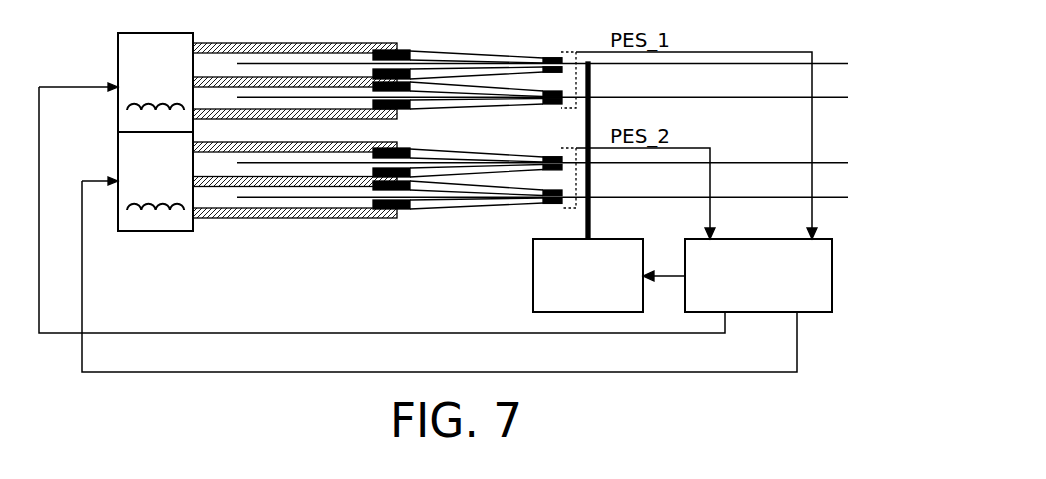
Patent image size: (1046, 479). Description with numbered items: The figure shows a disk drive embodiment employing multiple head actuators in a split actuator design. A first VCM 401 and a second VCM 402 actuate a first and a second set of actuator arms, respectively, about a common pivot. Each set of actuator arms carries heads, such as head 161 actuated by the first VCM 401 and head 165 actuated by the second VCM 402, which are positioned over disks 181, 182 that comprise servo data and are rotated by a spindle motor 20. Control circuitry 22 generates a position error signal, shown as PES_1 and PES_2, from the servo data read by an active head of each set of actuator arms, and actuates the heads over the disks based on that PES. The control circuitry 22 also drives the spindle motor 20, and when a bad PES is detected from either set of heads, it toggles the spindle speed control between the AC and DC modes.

The first VCM 401 is at (117, 43).
The second VCM 402 is at (117, 145).
The head 161 is at (543, 45).
The head 165 is at (545, 146).
The disk 181 is at (843, 52).
The disk 182 is at (838, 153).
The spindle motor 20 is at (533, 275).
The control circuitry 22 is at (832, 276).